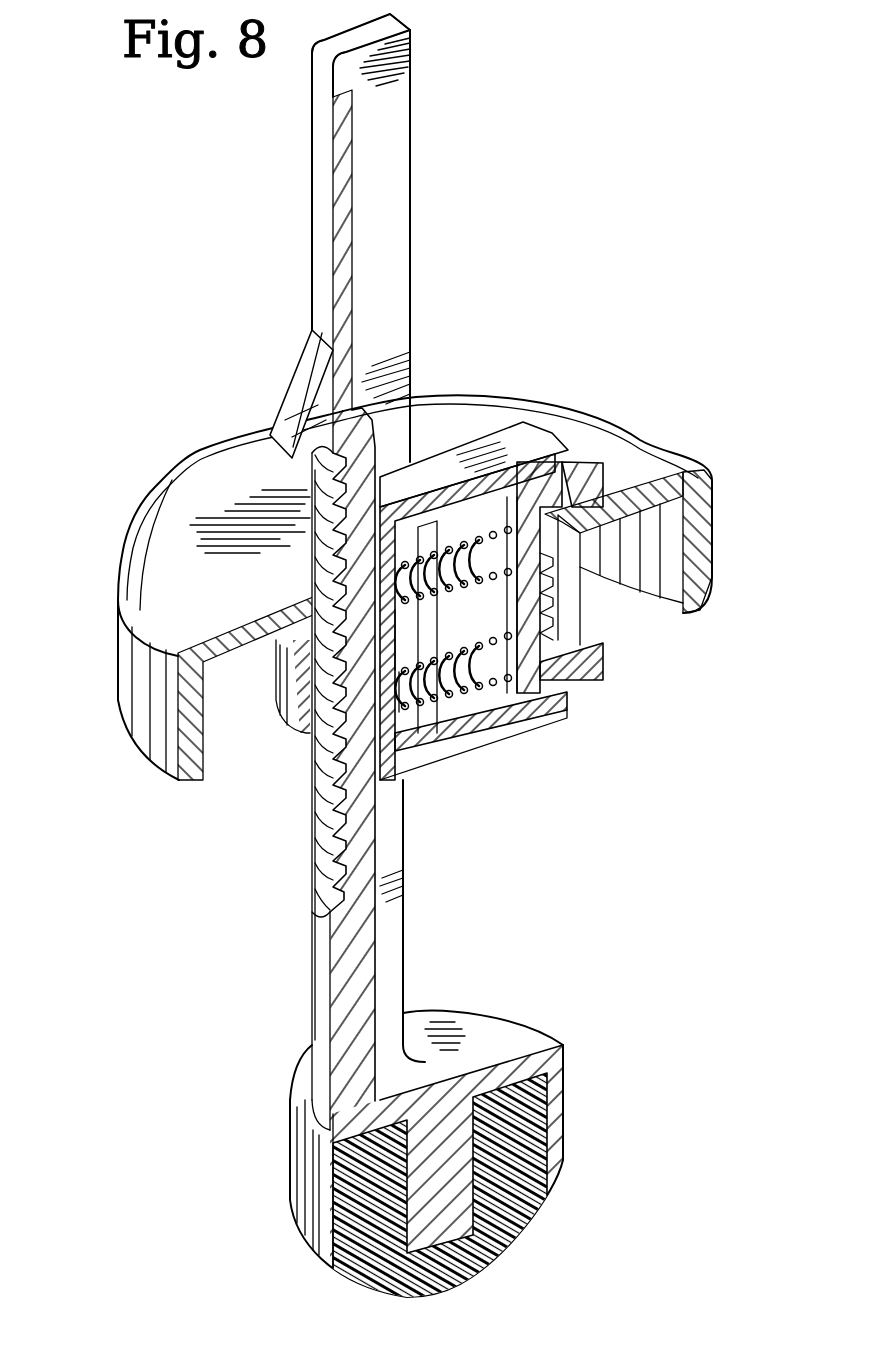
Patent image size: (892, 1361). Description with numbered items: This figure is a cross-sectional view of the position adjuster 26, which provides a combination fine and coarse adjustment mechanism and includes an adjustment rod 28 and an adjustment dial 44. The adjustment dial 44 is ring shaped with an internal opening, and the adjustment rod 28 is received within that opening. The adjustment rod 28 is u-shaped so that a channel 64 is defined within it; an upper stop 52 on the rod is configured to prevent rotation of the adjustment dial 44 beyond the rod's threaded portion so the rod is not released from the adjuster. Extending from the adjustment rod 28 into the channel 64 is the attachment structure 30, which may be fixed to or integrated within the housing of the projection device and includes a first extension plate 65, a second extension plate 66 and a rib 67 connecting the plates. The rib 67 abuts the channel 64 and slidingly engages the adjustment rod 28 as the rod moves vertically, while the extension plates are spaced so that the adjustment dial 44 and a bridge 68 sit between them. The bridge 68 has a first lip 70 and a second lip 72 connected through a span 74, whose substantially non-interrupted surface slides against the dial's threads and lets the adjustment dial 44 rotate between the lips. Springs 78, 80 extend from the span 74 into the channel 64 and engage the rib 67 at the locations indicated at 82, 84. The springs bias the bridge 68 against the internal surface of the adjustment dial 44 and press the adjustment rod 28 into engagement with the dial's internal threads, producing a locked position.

The position adjuster 26 is at (576, 92).
The adjustment rod 28 is at (442, 185).
The attachment structure 30 is at (439, 445).
The adjustment dial 44 is at (120, 544).
The upper stop 52 is at (300, 385).
The channel 64 is at (400, 90).
The first extension plate 65 is at (563, 462).
The second extension plate 66 is at (515, 730).
The rib 67 is at (377, 640).
The bridge 68 is at (624, 563).
The first lip 70 is at (597, 485).
The second lip 72 is at (605, 657).
The span 74 is at (545, 587).
The spring 78 is at (467, 615).
The spring 80 is at (435, 705).
The spring engagement with rib 82 is at (393, 587).
The spring engagement with rib 84 is at (390, 693).